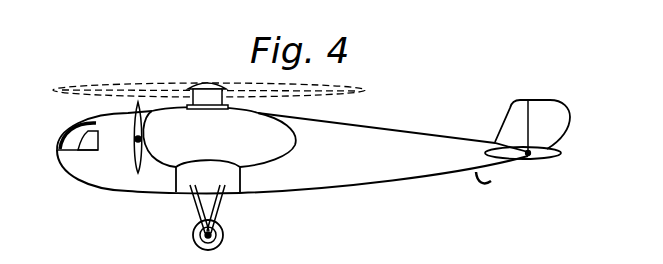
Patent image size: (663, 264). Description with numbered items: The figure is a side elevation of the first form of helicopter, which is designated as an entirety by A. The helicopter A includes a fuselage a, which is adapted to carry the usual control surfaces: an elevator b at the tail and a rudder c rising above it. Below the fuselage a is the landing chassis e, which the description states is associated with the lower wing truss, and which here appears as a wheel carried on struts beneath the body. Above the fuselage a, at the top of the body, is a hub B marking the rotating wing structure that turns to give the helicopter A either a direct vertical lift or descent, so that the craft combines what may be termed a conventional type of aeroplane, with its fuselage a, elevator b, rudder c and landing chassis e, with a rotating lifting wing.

The helicopter A is at (176, 160).
The rotor hub B is at (205, 82).
The fuselage a is at (384, 160).
The elevator b is at (531, 160).
The rudder c is at (570, 114).
The landing chassis e is at (211, 217).